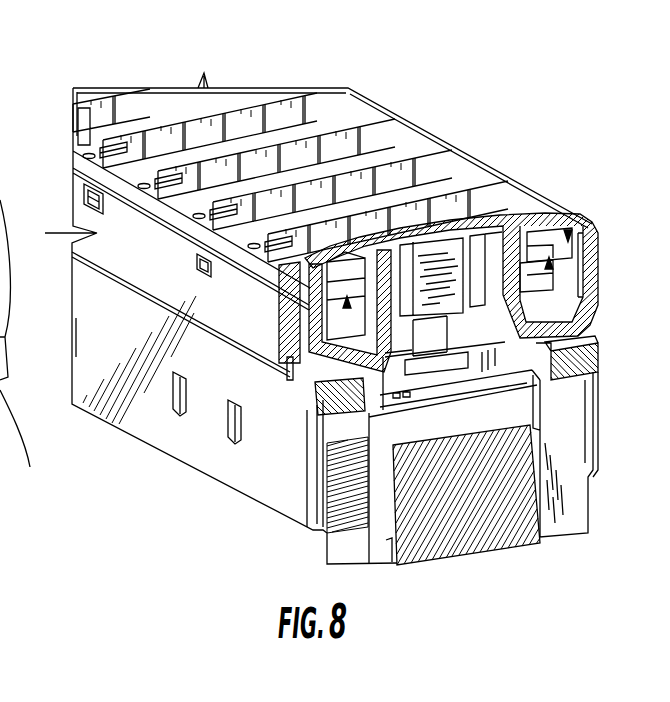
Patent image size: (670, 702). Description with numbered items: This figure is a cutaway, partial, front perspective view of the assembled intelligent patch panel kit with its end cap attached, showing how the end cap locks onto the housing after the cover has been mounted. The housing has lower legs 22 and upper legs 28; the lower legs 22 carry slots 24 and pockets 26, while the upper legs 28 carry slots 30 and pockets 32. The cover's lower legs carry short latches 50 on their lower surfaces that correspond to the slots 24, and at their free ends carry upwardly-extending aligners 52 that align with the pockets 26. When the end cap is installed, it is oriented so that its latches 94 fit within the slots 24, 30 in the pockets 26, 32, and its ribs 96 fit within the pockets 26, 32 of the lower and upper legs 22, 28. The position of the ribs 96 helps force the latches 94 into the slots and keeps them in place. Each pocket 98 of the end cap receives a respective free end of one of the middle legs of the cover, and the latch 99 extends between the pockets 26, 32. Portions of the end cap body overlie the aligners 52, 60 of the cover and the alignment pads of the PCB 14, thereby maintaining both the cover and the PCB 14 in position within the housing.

The PCB 14 is at (385, 390).
The lower legs 22 is at (292, 238).
The slots 24 is at (307, 297).
The pockets 26 is at (318, 400).
The upper legs 28 is at (593, 237).
The slots 30 is at (593, 272).
The pockets 32 is at (580, 333).
The short latches 50 is at (82, 195).
The aligners 52 is at (343, 277).
The aligners 60 is at (547, 247).
The latches 94 is at (347, 300).
The ribs 96 is at (403, 230).
The pocket 98 is at (433, 253).
The latch 99 is at (22, 350).